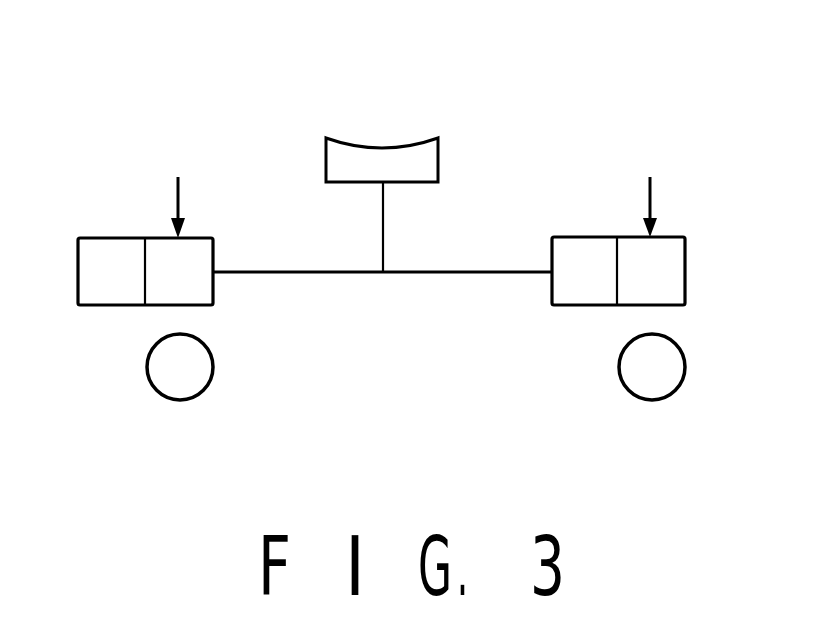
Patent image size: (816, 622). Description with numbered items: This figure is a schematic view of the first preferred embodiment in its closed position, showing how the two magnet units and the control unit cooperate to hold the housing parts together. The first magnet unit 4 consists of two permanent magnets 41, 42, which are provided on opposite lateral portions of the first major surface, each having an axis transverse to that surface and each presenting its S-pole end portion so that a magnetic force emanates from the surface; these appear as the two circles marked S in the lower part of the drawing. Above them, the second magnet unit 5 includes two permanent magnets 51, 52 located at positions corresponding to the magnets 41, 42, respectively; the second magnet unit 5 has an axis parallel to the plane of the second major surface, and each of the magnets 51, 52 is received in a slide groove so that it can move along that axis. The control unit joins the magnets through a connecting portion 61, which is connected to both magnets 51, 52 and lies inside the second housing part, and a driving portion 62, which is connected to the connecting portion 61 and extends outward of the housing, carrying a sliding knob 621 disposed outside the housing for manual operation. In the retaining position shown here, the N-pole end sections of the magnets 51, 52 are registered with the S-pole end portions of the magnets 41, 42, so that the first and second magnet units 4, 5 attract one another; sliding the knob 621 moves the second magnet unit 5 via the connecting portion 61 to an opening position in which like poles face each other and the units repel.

The first magnet unit 4 is at (555, 380).
The permanent magnet 41 is at (637, 362).
The permanent magnet 42 is at (197, 377).
The second magnet unit 5 is at (662, 108).
The permanent magnet 51 is at (662, 243).
The permanent magnet 52 is at (139, 248).
The connecting portion 61 is at (443, 270).
The driving portion 62 is at (384, 223).
The sliding knob 621 is at (380, 165).